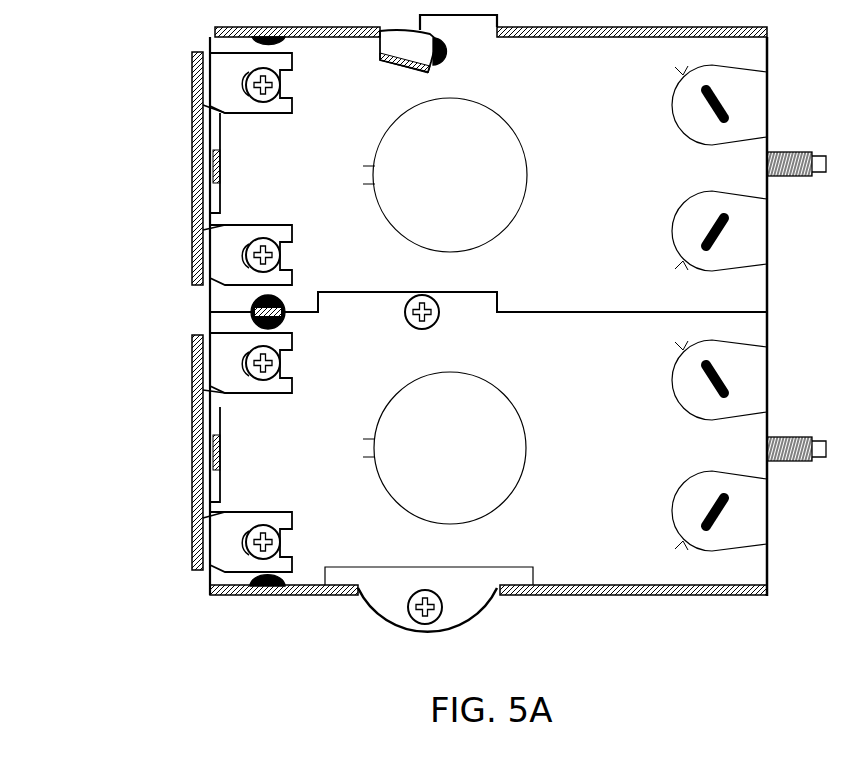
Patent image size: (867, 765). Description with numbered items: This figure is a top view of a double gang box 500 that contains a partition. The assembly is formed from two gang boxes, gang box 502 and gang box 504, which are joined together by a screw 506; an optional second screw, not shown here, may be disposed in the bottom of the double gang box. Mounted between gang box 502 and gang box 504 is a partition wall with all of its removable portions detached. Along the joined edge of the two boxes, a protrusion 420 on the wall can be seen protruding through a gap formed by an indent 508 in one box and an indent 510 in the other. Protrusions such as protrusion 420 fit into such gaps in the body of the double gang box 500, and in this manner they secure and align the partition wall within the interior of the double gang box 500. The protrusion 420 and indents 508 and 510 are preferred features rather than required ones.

The double gang box 500 is at (462, 323).
The gang box 502 is at (745, 56).
The gang box 504 is at (755, 566).
The screw 506 is at (415, 330).
The indent 508 is at (252, 300).
The indent 510 is at (252, 325).
The protrusion 420 is at (283, 298).